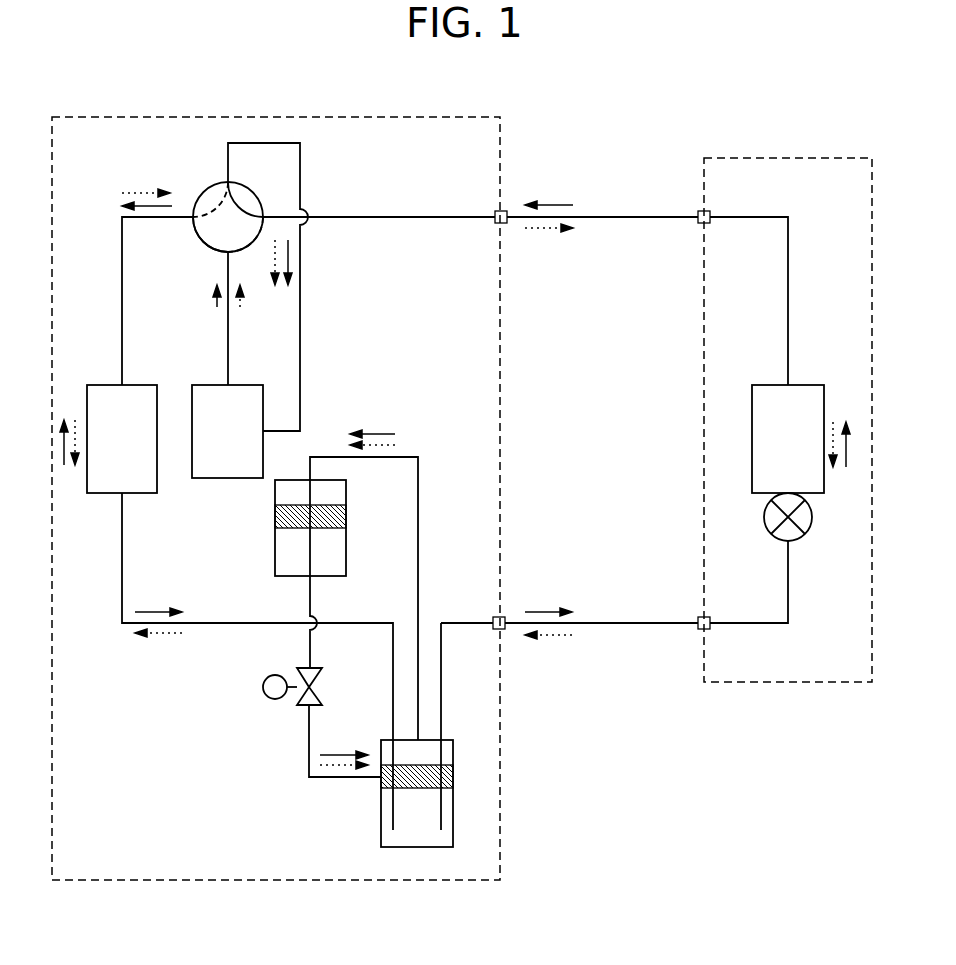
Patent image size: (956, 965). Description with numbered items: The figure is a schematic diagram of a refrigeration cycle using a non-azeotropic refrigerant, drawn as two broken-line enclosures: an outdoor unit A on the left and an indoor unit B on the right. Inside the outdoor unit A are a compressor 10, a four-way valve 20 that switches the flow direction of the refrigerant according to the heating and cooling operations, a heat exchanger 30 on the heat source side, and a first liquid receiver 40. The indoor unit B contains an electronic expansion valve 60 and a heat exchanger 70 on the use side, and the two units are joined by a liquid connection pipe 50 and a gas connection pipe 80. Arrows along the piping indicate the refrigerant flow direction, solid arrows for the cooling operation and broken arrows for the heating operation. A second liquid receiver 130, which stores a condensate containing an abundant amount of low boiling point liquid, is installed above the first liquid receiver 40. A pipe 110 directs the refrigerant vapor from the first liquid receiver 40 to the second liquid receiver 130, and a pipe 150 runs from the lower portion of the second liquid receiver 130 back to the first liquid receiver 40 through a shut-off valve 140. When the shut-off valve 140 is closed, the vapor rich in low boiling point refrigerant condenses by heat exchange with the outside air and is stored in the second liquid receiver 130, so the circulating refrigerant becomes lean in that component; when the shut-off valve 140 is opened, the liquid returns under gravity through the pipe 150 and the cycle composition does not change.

The compressor 10 is at (220, 478).
The four-way valve 20 is at (214, 193).
The heat exchanger on a heat source side 30 is at (140, 385).
The first liquid receiver 40 is at (381, 818).
The liquid connection pipe 50 is at (616, 623).
The electronic expansion valve 60 is at (800, 538).
The heat exchanger on a use side 70 is at (805, 385).
The gas connection pipe 80 is at (617, 217).
The pipe 110 is at (418, 505).
The second liquid receiver 130 is at (275, 556).
The shut-off valve 140 is at (263, 687).
The pipe 150 is at (309, 748).
The outdoor unit A is at (180, 880).
The indoor unit B is at (808, 682).